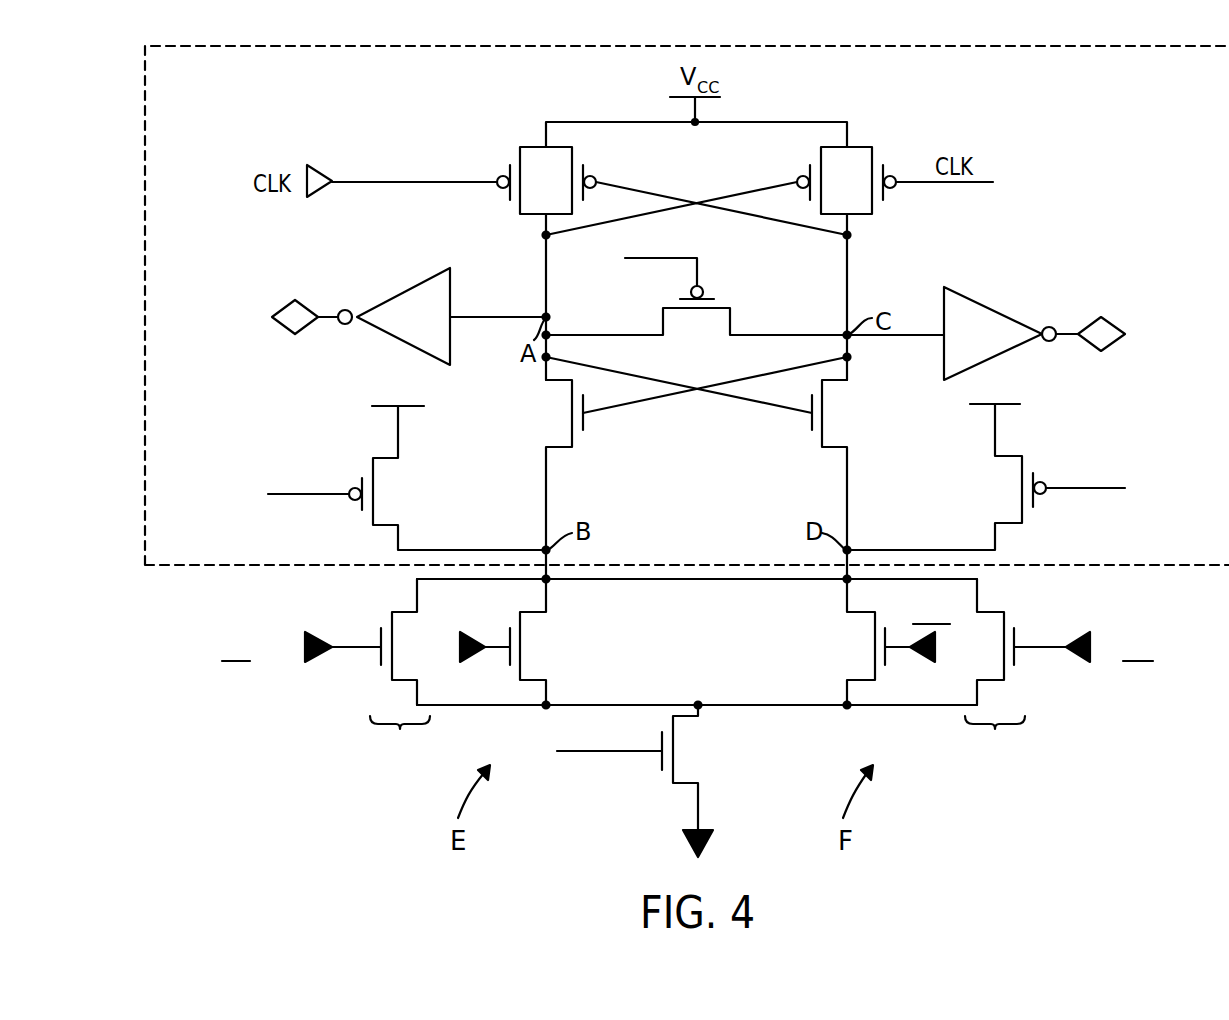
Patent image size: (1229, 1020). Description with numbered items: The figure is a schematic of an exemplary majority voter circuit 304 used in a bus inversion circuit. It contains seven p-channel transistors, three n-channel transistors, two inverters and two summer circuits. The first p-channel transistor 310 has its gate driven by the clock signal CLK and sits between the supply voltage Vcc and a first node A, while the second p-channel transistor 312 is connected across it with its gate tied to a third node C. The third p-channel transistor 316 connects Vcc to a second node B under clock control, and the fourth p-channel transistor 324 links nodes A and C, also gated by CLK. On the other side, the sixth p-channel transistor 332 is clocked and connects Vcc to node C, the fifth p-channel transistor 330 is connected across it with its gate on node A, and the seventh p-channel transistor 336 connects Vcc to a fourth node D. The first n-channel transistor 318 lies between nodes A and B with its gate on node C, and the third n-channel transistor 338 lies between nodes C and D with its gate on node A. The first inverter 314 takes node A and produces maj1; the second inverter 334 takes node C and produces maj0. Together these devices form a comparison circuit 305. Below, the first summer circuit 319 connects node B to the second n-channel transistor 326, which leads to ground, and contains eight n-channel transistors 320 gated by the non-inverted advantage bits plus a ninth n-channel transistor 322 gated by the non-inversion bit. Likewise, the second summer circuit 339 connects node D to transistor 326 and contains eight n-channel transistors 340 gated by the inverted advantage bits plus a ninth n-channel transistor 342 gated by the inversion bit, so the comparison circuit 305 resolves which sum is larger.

The majority voter circuit 304 is at (120, 152).
The comparison circuit 305 is at (168, 407).
The first p-channel transistor 310 is at (524, 147).
The second p-channel transistor 312 is at (574, 151).
The first inverter 314 is at (437, 276).
The third p-channel transistor 316 is at (398, 458).
The first n-channel transistor 318 is at (572, 447).
The first summer circuit 319 is at (626, 638).
The eight n-channel transistors 320 is at (365, 649).
The ninth n-channel transistor 322 is at (548, 613).
The fourth p-channel transistor 324 is at (730, 308).
The second n-channel transistor 326 is at (673, 783).
The fifth p-channel transistor 330 is at (820, 152).
The sixth p-channel transistor 332 is at (873, 148).
The second inverter 334 is at (979, 299).
The seventh p-channel transistor 336 is at (1022, 456).
The third n-channel transistor 338 is at (847, 447).
The second summer circuit 339 is at (819, 638).
The eight n-channel transistors 340 is at (1004, 612).
The ninth n-channel transistor 342 is at (875, 680).